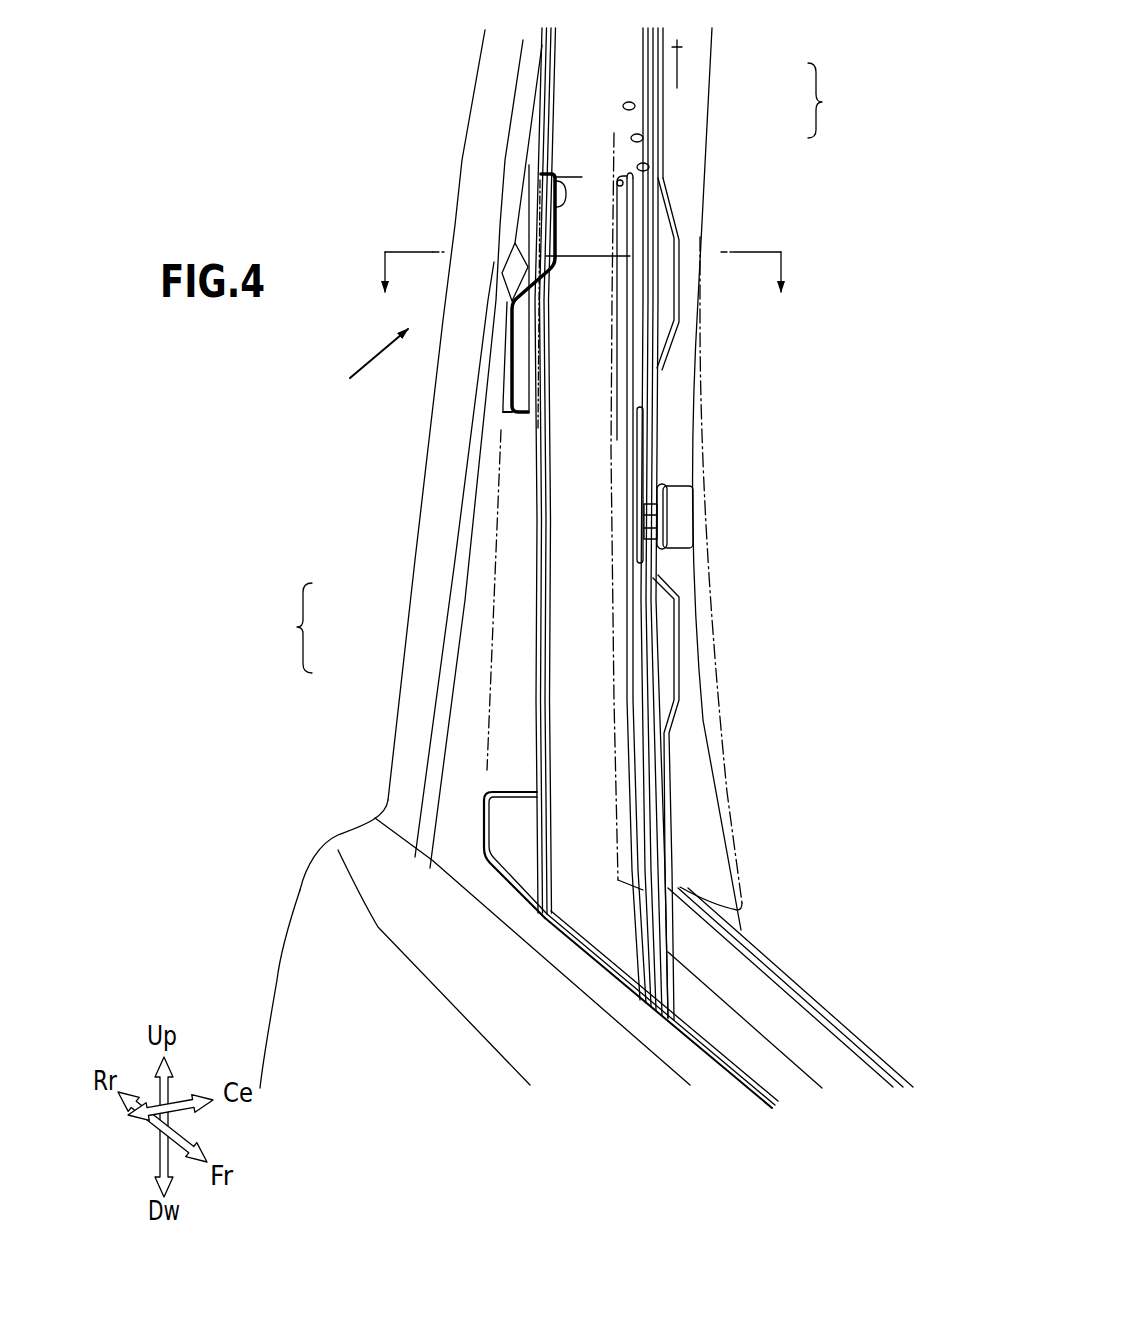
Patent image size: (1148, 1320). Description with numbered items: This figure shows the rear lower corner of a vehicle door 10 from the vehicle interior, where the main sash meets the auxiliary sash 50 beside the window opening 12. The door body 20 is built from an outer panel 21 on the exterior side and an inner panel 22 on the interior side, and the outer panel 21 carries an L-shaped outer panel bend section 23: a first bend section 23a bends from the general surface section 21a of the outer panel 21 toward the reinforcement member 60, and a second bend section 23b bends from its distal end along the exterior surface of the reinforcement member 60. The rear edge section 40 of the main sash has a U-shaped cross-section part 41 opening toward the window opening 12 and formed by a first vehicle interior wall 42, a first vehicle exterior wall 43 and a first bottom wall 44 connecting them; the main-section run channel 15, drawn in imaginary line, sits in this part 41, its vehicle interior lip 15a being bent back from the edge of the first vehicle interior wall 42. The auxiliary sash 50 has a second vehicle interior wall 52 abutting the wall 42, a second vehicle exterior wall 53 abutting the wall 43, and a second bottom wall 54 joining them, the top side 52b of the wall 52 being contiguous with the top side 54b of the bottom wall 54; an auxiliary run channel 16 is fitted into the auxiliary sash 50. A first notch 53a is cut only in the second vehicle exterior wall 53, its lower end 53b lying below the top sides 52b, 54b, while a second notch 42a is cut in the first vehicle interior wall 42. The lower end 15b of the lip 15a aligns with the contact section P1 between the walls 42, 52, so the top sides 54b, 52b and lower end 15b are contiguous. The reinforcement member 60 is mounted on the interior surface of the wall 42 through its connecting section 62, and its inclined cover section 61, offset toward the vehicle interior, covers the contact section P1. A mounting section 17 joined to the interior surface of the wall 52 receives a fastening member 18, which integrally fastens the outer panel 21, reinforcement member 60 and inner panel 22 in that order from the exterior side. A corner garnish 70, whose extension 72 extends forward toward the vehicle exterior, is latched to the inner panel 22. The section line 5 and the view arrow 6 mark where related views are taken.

The vehicle door 10 is at (243, 193).
The window opening 12 is at (827, 909).
The main-section run channel 15 is at (545, 86).
The vehicle interior lip 15a is at (713, 50).
The lower end of vehicle interior lip 15b is at (625, 198).
The auxiliary run channel 16 is at (538, 522).
The mounting section 17 is at (648, 520).
The fastening member 18 is at (681, 492).
The door body 20 is at (311, 867).
The outer panel 21 is at (270, 1002).
The general surface section 21a is at (378, 1044).
The inner panel 22 is at (678, 650).
The outer panel bend section 23 is at (384, 600).
The first bend section 23a is at (577, 729).
The second bend section 23b is at (640, 663).
The rear edge section 40 is at (534, 127).
The U-shaped cross-section part 41 is at (831, 100).
The first vehicle interior wall 42 is at (634, 108).
The second notch 42a is at (614, 158).
The first vehicle exterior wall 43 is at (648, 63).
The first bottom wall 44 is at (656, 92).
The auxiliary sash 50 is at (537, 873).
The second vehicle interior wall 52 is at (636, 960).
The top side of second vehicle interior wall 52b is at (650, 168).
The second vehicle exterior wall 53 is at (548, 880).
The first notch 53a is at (553, 182).
The lower end of first notch 53b is at (548, 306).
The second bottom wall 54 is at (589, 916).
The top side of second bottom wall 54b is at (572, 177).
The reinforcement member 60 is at (663, 332).
The cover section 61 is at (660, 206).
The connecting section 62 is at (645, 140).
The corner garnish 70 is at (733, 792).
The extension 72 is at (605, 455).
The contact section P1 is at (612, 191).
The section line 5- 5 is at (584, 271).
The view direction 6 is at (364, 368).